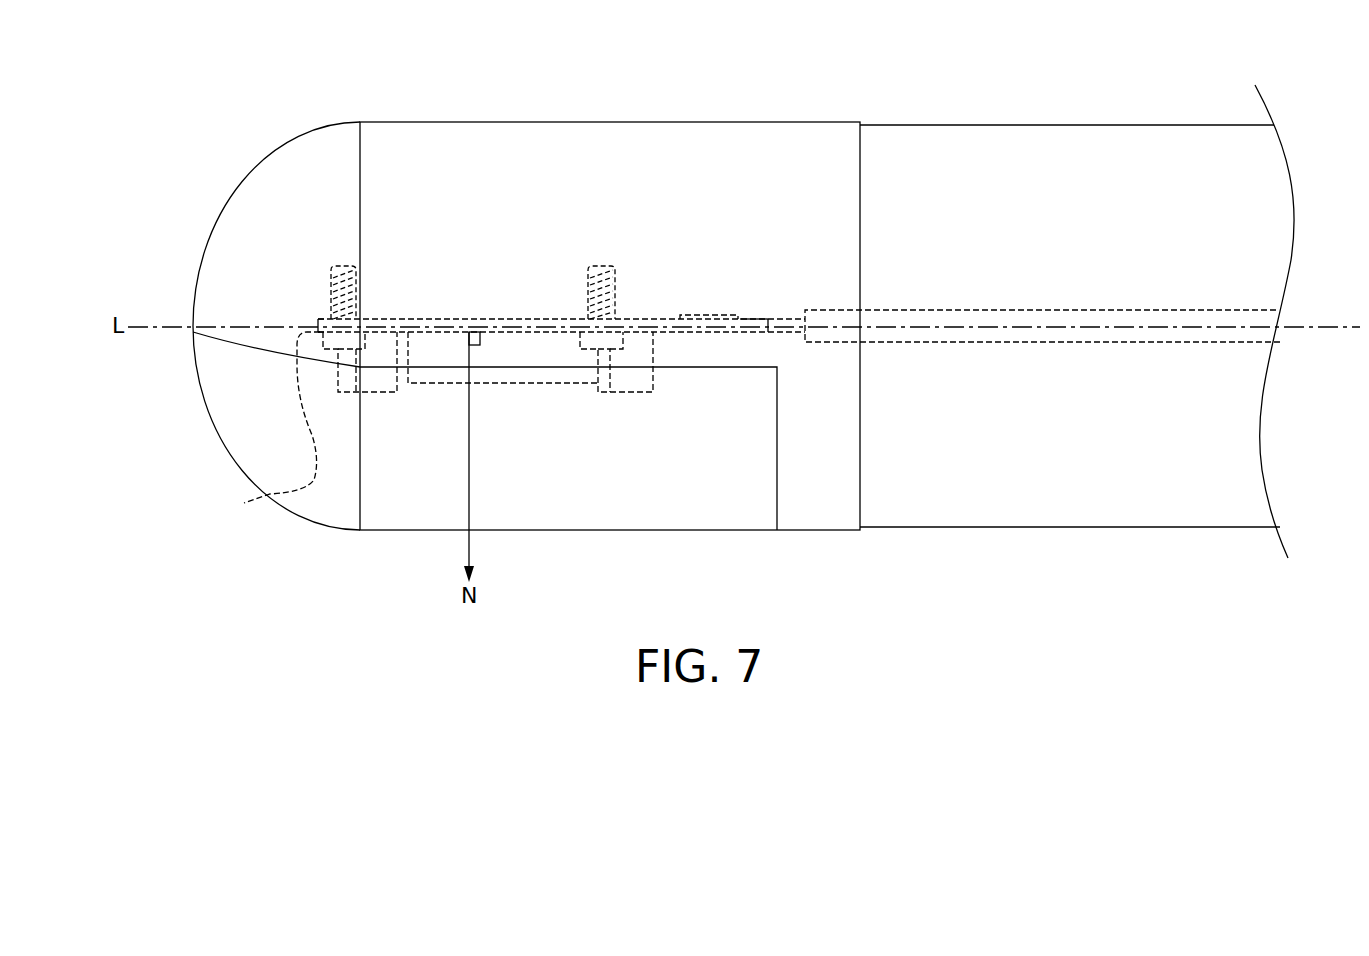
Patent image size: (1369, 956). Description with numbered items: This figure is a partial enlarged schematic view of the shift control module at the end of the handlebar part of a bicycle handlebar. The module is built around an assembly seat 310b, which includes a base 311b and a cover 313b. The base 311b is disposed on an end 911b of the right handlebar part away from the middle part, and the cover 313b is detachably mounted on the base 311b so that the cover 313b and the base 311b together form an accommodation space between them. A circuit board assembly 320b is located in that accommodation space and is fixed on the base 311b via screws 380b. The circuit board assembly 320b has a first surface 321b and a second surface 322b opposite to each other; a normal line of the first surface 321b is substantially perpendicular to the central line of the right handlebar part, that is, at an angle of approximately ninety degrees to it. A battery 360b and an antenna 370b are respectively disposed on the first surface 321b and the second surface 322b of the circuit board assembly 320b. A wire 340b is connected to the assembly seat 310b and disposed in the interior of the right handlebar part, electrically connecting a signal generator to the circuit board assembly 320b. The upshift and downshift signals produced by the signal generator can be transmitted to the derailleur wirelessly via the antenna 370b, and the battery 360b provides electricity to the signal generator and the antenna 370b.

The assembly seat 310b is at (120, 345).
The base 311b is at (265, 340).
The cover 313b is at (253, 461).
The circuit board assembly 320b is at (256, 425).
The first surface 321b is at (719, 346).
The second surface 322b is at (757, 306).
The wire 340b is at (1077, 318).
The battery 360b is at (528, 373).
The antenna 370b is at (708, 315).
The screws 380b is at (342, 263).
The end 911b is at (1094, 501).